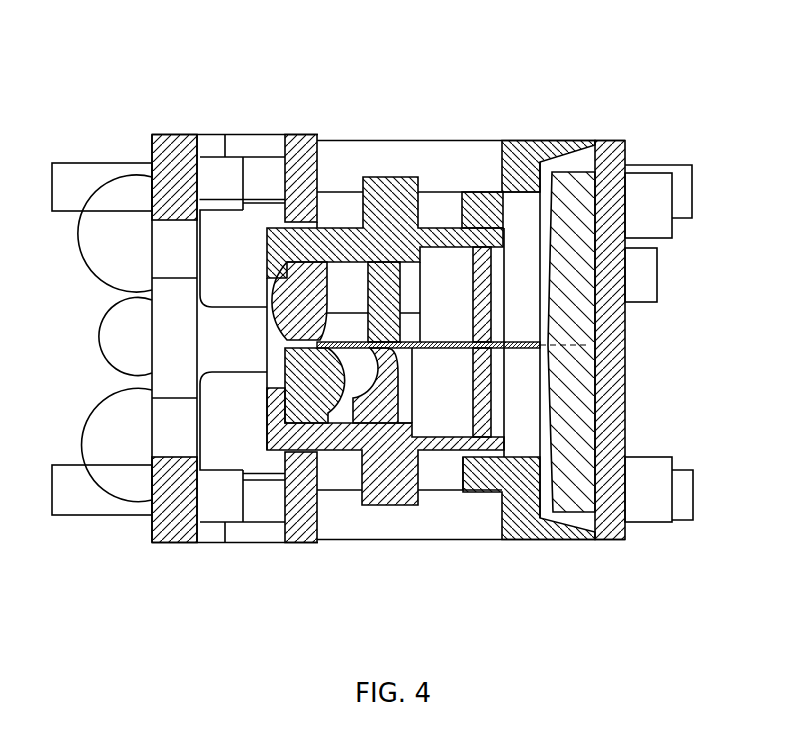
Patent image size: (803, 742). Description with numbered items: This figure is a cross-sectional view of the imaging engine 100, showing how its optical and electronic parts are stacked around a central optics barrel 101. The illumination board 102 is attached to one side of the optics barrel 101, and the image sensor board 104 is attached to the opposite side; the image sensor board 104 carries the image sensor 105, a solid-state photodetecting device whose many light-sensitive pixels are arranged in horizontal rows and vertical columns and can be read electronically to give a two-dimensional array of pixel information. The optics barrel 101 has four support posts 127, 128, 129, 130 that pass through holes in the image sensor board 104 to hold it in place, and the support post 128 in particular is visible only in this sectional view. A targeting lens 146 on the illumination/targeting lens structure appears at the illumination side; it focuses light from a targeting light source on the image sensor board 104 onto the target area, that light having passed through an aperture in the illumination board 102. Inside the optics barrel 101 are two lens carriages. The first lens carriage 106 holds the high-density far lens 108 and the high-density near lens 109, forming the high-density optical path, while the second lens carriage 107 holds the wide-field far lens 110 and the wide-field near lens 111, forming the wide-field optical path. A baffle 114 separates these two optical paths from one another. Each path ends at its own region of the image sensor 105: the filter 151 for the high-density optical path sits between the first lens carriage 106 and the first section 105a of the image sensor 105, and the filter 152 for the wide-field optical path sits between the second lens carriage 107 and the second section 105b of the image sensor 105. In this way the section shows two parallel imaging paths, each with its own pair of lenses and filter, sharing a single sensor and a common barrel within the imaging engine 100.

The imaging engine 100 is at (140, 60).
The optics barrel 101 is at (520, 515).
The illumination board 102 is at (300, 163).
The image sensor board 104 is at (608, 412).
The image sensor 105 is at (598, 335).
The first section of the image sensor 105a is at (567, 310).
The second section of the image sensor 105b is at (573, 472).
The first lens carriage 106 is at (393, 213).
The second lens carriage 107 is at (348, 437).
The high-density far lens 108 is at (302, 302).
The high-density near lens 109 is at (385, 292).
The wide-field far lens 110 is at (310, 378).
The wide-field near lens 111 is at (393, 382).
The baffle 114 is at (547, 350).
The support post 127 is at (682, 192).
The support post 128 is at (680, 493).
The support post 129 is at (652, 225).
The support post 130 is at (658, 462).
The targeting lens 146 is at (176, 158).
The filter for the high-density optical path 151 is at (487, 293).
The filter for the wide-field optical path 152 is at (482, 420).